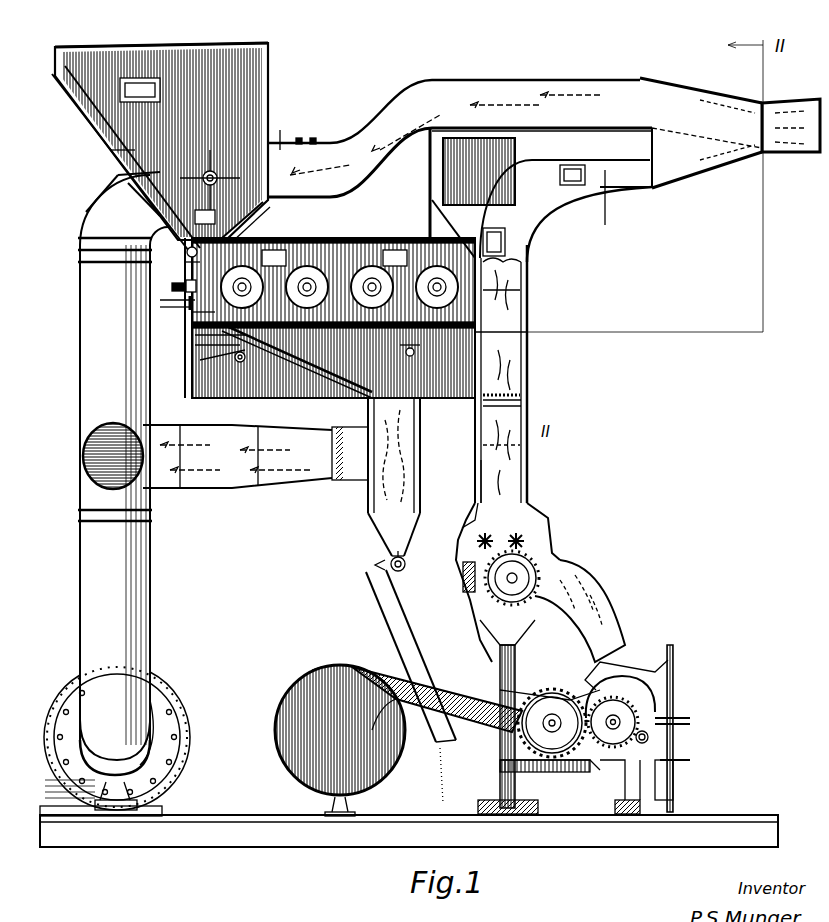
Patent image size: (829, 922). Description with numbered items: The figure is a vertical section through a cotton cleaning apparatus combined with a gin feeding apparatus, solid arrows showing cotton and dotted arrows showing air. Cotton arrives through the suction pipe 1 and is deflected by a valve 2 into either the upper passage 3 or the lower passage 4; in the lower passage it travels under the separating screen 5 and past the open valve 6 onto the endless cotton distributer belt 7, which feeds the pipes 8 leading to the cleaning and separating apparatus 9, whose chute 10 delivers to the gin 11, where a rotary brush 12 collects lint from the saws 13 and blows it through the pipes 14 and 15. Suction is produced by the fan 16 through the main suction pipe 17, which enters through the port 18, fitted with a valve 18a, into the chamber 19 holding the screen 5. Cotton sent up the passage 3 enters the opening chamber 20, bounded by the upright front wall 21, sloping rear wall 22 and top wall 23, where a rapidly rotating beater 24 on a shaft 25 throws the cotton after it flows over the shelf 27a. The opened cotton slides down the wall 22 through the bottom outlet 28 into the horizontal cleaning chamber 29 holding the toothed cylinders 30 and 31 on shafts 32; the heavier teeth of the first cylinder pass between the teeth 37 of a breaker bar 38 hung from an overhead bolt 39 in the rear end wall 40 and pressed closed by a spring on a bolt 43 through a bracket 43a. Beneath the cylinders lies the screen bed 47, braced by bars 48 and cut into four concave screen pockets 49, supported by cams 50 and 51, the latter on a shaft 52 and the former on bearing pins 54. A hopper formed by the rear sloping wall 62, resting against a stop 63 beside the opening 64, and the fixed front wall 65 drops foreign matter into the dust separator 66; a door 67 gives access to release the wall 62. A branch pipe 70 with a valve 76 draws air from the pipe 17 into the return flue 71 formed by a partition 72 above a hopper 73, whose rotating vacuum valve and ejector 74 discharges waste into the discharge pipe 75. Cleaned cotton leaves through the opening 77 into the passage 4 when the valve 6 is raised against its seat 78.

The suction pipe 1 is at (790, 103).
The valve 2 is at (720, 110).
The upper passage 3 is at (645, 88).
The lower passage 4 is at (668, 172).
The separating screen 5 is at (355, 169).
The valve 6 is at (527, 276).
The endless cotton distributer belt 7 is at (530, 340).
The pipes 8 is at (528, 480).
The cleaning and separating apparatus 9 is at (548, 548).
The chute 10 is at (612, 632).
The gin 11 is at (675, 700).
The rotary brush 12 is at (548, 688).
The saws 13 is at (618, 700).
The pipe 14 is at (450, 690).
The pipe 15 is at (310, 672).
The fan 16 is at (178, 708).
The main suction pipe 17 is at (150, 600).
The port 18 is at (492, 135).
The valve 18a is at (570, 110).
The chamber 19 is at (560, 135).
The opening chamber 20 is at (270, 83).
The upright front wall 21 is at (262, 132).
The sloping rear wall 22 is at (95, 122).
The top wall 23 is at (180, 44).
The beater 24 is at (303, 138).
The rotating shaft 25 is at (150, 185).
The shelf 27a is at (250, 240).
The bottom outlet 28 is at (188, 254).
The cleaning chamber 29 is at (350, 245).
The toothed cleaning cylinder 30 is at (297, 245).
The toothed cleaning cylinders 31 is at (385, 245).
The shaft 32 is at (325, 245).
The teeth 37 is at (186, 270).
The breaker bar 38 is at (180, 285).
The bolt 39 is at (166, 284).
The rear end wall 40 is at (192, 313).
The bolt 43 is at (160, 300).
The bracket 43a is at (165, 307).
The screen bed 47 is at (195, 336).
The bars 48 is at (195, 346).
The screen pockets 49 is at (205, 362).
The cams 50 is at (236, 360).
The cams 51 is at (500, 368).
The shaft 52 is at (500, 382).
The bearing pin 54 is at (228, 398).
The rear sloping hopper wall 62 is at (318, 392).
The stop 63 is at (333, 410).
The opening 64 is at (412, 408).
The fixed sloping front wall 65 is at (422, 402).
The dust separator 66 is at (396, 462).
The door 67 is at (240, 355).
The branch pipe 70 is at (220, 488).
The return flue 71 is at (340, 488).
The partition 72 is at (372, 518).
The hopper 73 is at (385, 552).
The rotating vacuum valve and ejector 74 is at (402, 560).
The discharge pipe 75 is at (400, 630).
The valve 76 is at (300, 462).
The opening 77 is at (522, 292).
The seat 78 is at (527, 250).